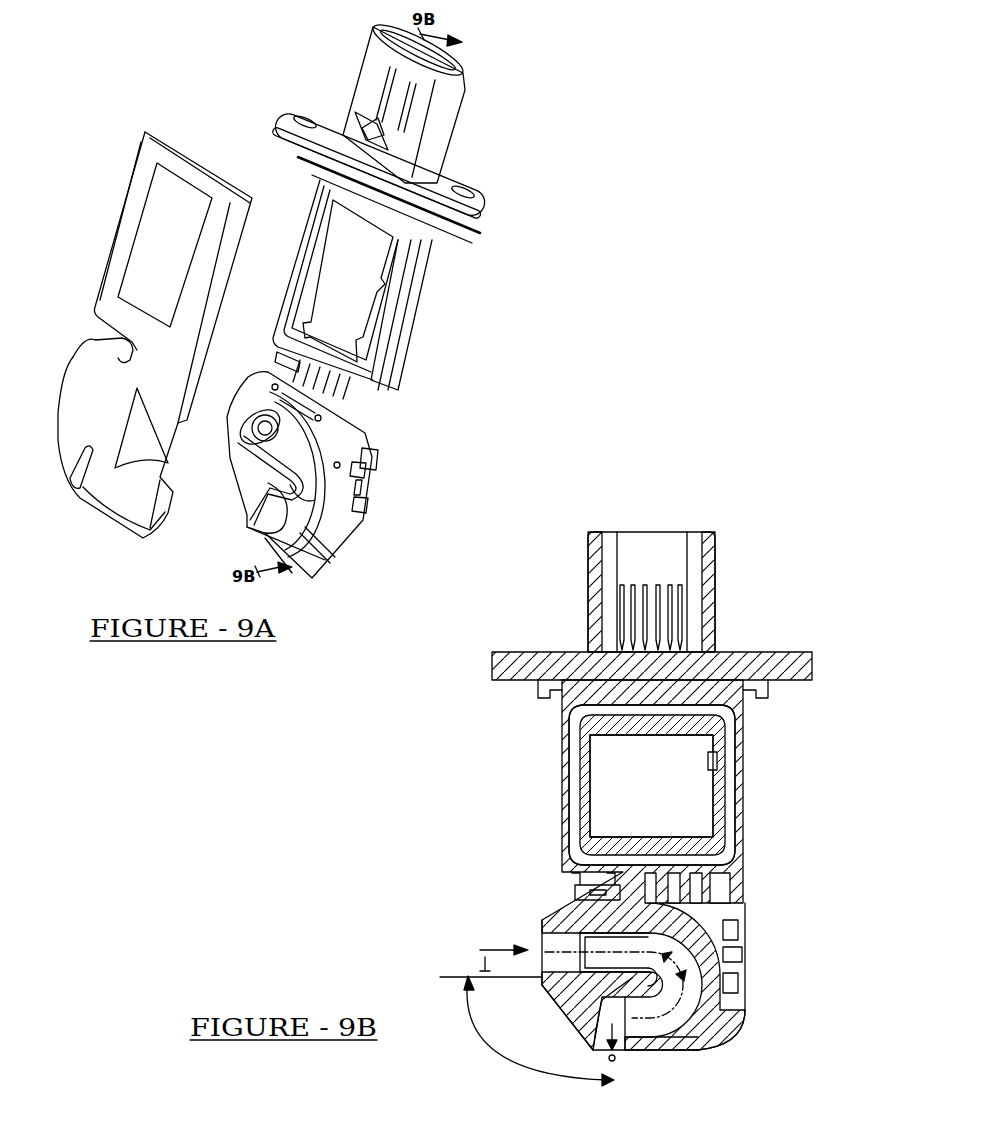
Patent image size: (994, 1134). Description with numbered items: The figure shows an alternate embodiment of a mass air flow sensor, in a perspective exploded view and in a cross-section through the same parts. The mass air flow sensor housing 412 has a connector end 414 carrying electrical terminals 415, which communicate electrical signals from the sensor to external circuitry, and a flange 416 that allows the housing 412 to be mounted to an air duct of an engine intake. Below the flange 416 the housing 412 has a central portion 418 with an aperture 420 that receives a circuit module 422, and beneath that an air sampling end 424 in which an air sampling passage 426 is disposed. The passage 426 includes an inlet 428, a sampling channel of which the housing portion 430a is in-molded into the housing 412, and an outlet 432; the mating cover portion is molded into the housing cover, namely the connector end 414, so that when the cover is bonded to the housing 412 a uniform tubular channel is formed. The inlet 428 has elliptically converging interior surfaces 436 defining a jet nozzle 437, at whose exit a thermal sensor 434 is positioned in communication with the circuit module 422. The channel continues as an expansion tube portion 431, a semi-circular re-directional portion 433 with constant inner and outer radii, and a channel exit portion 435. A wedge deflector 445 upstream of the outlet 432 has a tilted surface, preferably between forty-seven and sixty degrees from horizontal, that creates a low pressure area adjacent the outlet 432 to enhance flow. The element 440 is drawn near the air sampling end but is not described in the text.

In FIG. 9A, the mass air flow sensor housing 412 is at (417, 350).
In FIG. 9B, the mass air flow sensor housing 412 is at (743, 817).
In FIG. 9A, the connector end 414 is at (105, 510).
In FIG. 9B, the connector end 414 is at (715, 568).
In FIG. 9B, the electrical terminals 415 is at (657, 585).
In FIG. 9A, the flange 416 is at (485, 213).
In FIG. 9B, the flange 416 is at (513, 672).
In FIG. 9B, the central portion 418 is at (744, 758).
In FIG. 9A, the aperture 420 is at (373, 263).
In FIG. 9B, the aperture 420 is at (583, 758).
In FIG. 9B, the circuit module 422 is at (662, 797).
In FIG. 9A, the air sampling end 424 is at (336, 588).
In FIG. 9B, the air sampling end 424 is at (722, 1036).
In FIG. 9B, the air sampling passage 426 is at (695, 1034).
In FIG. 9B, the inlet 428 is at (522, 941).
In FIG. 9A, the housing portion 430a is at (302, 500).
In FIG. 9B, the expansion tube portion 431 is at (595, 945).
In FIG. 9B, the outlet 432 is at (627, 1036).
In FIG. 9B, the re-directional portion 433 is at (677, 1000).
In FIG. 9A, the thermal sensor 434 is at (255, 437).
In FIG. 9B, the channel exit portion 435 is at (655, 1023).
In FIG. 9B, the elliptically converging interior surfaces 436 is at (545, 935).
In FIG. 9B, the jet nozzle 437 is at (568, 962).
In FIG. 9A, the connector terminals 440 is at (298, 453).
In FIG. 9B, the connector terminals 440 is at (720, 955).
In FIG. 9B, the wedge deflector 445 is at (574, 1012).